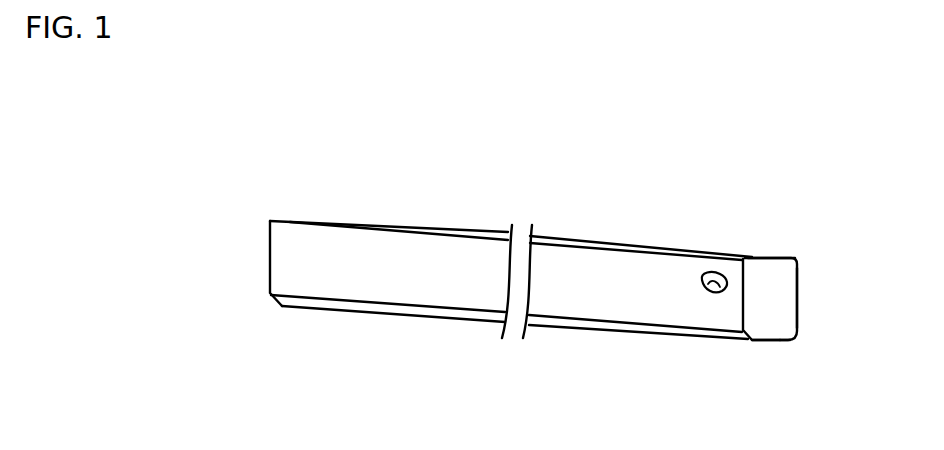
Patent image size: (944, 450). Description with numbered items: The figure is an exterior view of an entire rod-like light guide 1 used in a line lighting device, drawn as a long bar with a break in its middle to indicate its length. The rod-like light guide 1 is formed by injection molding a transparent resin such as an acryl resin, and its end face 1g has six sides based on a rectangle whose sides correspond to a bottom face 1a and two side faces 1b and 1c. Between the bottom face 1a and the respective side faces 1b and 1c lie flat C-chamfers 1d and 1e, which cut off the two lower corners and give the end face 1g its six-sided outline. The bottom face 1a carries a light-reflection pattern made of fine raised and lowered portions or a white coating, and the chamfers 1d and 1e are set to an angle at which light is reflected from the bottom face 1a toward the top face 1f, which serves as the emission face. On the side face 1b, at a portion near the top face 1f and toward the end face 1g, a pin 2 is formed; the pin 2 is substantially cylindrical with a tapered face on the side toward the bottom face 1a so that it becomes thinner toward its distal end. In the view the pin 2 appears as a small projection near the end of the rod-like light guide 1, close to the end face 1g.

The rod-like light guide 1 is at (566, 218).
The bottom face 1a is at (765, 341).
The side face 1b is at (433, 250).
The side face 1c is at (797, 280).
The chamfer 1d is at (592, 323).
The chamfer 1e is at (790, 340).
The top face 1f is at (768, 258).
The end face 1g is at (773, 298).
The pin 2 is at (717, 273).